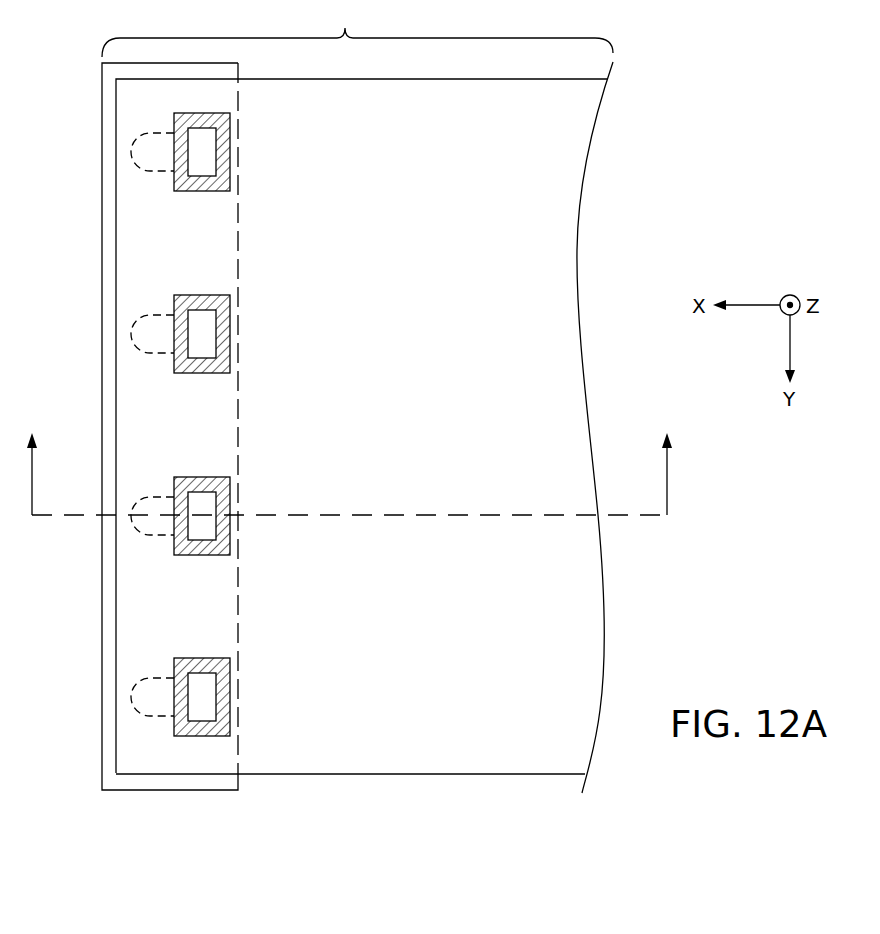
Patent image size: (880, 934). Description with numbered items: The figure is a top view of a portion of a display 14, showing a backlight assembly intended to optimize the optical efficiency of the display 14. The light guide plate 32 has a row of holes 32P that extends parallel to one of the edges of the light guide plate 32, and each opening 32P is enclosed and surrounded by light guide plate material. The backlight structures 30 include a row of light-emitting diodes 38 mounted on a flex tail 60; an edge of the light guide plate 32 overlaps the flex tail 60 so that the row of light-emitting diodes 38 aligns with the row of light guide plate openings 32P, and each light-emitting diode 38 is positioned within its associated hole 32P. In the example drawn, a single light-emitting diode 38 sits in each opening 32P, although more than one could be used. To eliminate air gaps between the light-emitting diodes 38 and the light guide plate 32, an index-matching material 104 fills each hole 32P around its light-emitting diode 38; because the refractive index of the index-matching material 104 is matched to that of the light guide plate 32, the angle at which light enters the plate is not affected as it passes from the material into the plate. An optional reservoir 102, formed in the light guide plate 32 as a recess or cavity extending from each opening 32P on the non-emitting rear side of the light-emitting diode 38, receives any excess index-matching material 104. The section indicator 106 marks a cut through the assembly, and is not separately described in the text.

The display 14 is at (691, 73).
The backlight structures 30 is at (357, 29).
The light guide plate 32 is at (478, 753).
The light guide plate opening 32P is at (222, 665).
The light-emitting diode 38 is at (203, 318).
The flex tail 60 is at (106, 292).
The reservoir 102 is at (144, 696).
The index-matching material 104 is at (188, 662).
The section line 106 is at (652, 517).